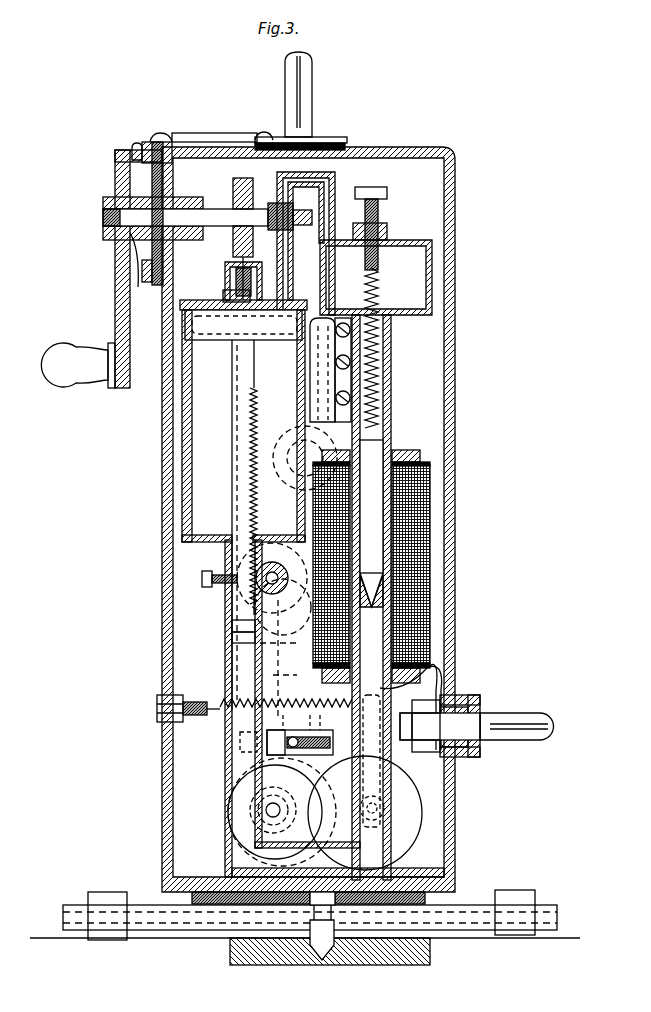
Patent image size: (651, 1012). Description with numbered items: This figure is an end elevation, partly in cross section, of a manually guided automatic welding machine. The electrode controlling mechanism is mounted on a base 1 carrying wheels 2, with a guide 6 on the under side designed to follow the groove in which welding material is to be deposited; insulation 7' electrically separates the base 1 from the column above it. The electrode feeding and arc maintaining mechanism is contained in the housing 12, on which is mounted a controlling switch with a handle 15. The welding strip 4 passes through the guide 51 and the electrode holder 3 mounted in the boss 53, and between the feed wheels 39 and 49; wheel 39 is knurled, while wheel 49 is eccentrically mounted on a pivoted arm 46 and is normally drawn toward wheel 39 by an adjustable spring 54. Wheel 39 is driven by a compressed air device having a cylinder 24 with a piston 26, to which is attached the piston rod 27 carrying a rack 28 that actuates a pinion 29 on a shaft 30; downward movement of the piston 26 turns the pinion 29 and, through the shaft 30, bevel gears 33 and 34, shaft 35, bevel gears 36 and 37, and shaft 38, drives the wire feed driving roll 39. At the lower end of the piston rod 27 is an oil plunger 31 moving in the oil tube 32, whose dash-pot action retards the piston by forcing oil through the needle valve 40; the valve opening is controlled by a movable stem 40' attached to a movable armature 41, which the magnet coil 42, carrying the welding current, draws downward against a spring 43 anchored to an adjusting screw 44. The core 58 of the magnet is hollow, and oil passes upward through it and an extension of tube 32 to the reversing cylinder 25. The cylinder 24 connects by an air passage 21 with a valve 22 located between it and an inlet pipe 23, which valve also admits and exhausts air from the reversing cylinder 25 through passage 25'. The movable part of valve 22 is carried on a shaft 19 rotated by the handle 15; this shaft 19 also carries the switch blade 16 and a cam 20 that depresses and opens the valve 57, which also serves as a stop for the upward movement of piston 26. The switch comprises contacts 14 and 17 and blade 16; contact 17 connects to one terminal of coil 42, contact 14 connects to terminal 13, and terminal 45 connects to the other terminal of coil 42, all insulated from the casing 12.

The base 1 is at (447, 917).
The wheels 2 is at (103, 893).
The electrode holder 3 is at (310, 916).
The welding strip 4 is at (352, 933).
The guide 6 is at (312, 940).
The insulation 7' is at (336, 890).
The housing 12 is at (454, 372).
The terminal 13 is at (309, 70).
The contact 14 is at (160, 141).
The handle 15 is at (56, 368).
The switch blade 16 is at (138, 148).
The contact 17 is at (117, 262).
The shaft 19 is at (214, 218).
The cam 20 is at (236, 185).
The air passage 21 is at (288, 258).
The valve 22 is at (276, 203).
The inlet pipe 23 is at (273, 231).
The cylinder 24 is at (243, 426).
The reversing cylinder 25 is at (403, 273).
The passage 25' is at (376, 148).
The piston 26 is at (269, 333).
The piston rod 27 is at (244, 367).
The rack 28 is at (257, 432).
The pinion 29 is at (278, 563).
The shaft 30 is at (274, 580).
The oil plunger 31 is at (236, 626).
The oil tube 32 is at (240, 667).
The bevel gear 33 is at (292, 600).
The bevel gear 34 is at (262, 644).
The shaft 35 is at (276, 681).
The bevel gear 36 is at (262, 788).
The bevel gear 37 is at (288, 812).
The shaft 38 is at (272, 847).
The wire feed driving roll 39 is at (300, 800).
The needle valve 40 is at (444, 703).
The movable stem 40' is at (422, 597).
The armature 41 is at (372, 523).
The magnet coil 42 is at (415, 537).
The spring 43 is at (377, 310).
The adjusting screw 44 is at (380, 190).
The terminal 45 is at (533, 720).
The pivoted arm 46 is at (388, 757).
The feed wheel 49 is at (405, 812).
The guide 51 is at (325, 340).
The boss 53 is at (372, 876).
The adjustable spring 54 is at (232, 718).
The valve 57 is at (237, 315).
The core 58 is at (393, 633).